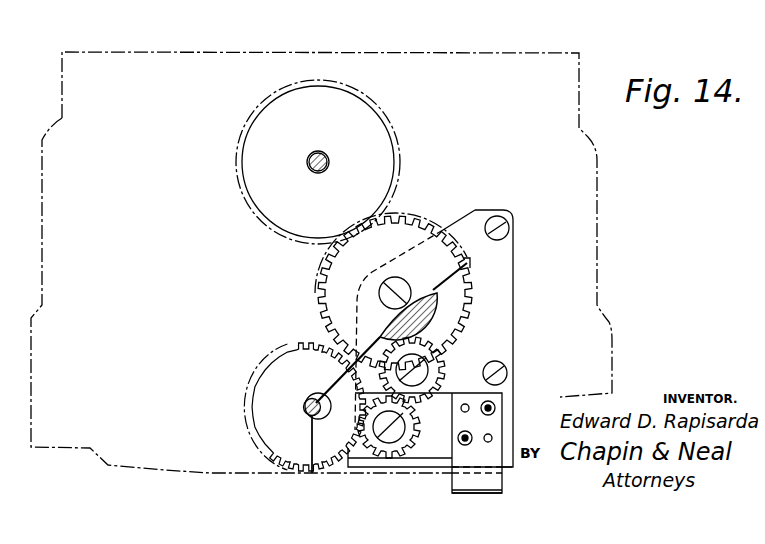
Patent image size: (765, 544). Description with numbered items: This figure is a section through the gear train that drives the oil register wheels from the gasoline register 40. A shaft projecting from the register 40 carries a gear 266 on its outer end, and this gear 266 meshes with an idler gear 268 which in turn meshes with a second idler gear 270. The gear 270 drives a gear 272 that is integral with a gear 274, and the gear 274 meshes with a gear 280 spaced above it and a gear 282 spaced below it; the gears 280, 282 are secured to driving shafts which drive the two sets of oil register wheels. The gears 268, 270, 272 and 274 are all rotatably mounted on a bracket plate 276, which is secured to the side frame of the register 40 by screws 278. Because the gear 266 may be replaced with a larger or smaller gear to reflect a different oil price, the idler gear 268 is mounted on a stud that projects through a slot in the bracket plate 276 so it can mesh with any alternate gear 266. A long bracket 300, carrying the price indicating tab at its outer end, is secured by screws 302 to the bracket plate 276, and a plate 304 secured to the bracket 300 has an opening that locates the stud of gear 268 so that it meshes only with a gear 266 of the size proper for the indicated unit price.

The register 40 is at (599, 172).
The gear 280 is at (393, 192).
The gear 274 is at (415, 216).
The gear 282 is at (305, 343).
The gear 272 is at (437, 306).
The bracket plate 276 is at (515, 263).
The screws 278 is at (507, 219).
The second idler gear 270 is at (432, 345).
The idler gear 268 is at (389, 462).
The plate 304 is at (447, 392).
The screws 302 is at (467, 437).
The long bracket 300 is at (483, 494).
The gear 266 is at (336, 452).